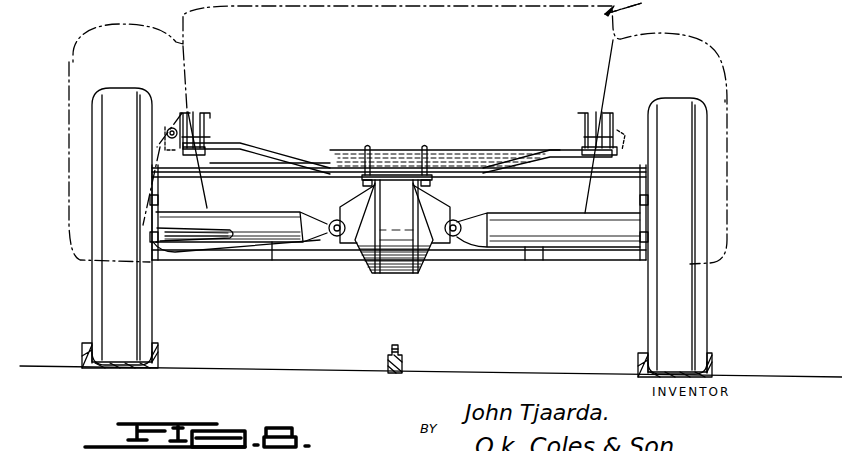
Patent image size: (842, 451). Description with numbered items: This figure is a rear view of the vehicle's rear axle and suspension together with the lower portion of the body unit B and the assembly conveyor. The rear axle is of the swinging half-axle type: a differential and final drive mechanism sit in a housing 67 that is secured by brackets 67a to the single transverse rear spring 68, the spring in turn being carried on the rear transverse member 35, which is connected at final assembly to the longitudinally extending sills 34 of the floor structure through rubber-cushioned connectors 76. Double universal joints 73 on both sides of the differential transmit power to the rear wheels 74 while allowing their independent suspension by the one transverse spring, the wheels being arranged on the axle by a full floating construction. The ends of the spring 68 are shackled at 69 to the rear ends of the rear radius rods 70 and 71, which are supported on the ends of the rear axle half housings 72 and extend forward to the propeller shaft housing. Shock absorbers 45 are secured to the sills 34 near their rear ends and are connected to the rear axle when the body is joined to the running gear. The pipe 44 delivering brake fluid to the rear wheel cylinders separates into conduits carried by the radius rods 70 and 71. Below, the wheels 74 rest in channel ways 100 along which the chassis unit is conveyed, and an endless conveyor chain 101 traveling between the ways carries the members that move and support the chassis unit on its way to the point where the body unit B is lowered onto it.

The sills 34 is at (215, 118).
The rear transverse member 35 is at (258, 150).
The pipes 44 is at (272, 260).
The shock absorbers 45 is at (147, 233).
The housing 67 is at (397, 274).
The brackets 67a is at (363, 182).
The rear spring 68 is at (348, 150).
The shackles 69 is at (153, 182).
The rear radius rod 70 is at (190, 262).
The rear radius rod 71 is at (543, 260).
The rear axle half housings 72 is at (237, 233).
The double universal joints 73 is at (330, 233).
The rear wheels 74 is at (115, 156).
The connectors 76 is at (196, 115).
The channel ways 100 is at (712, 365).
The endless conveyor chain 101 is at (402, 358).
The body unit B is at (633, 8).